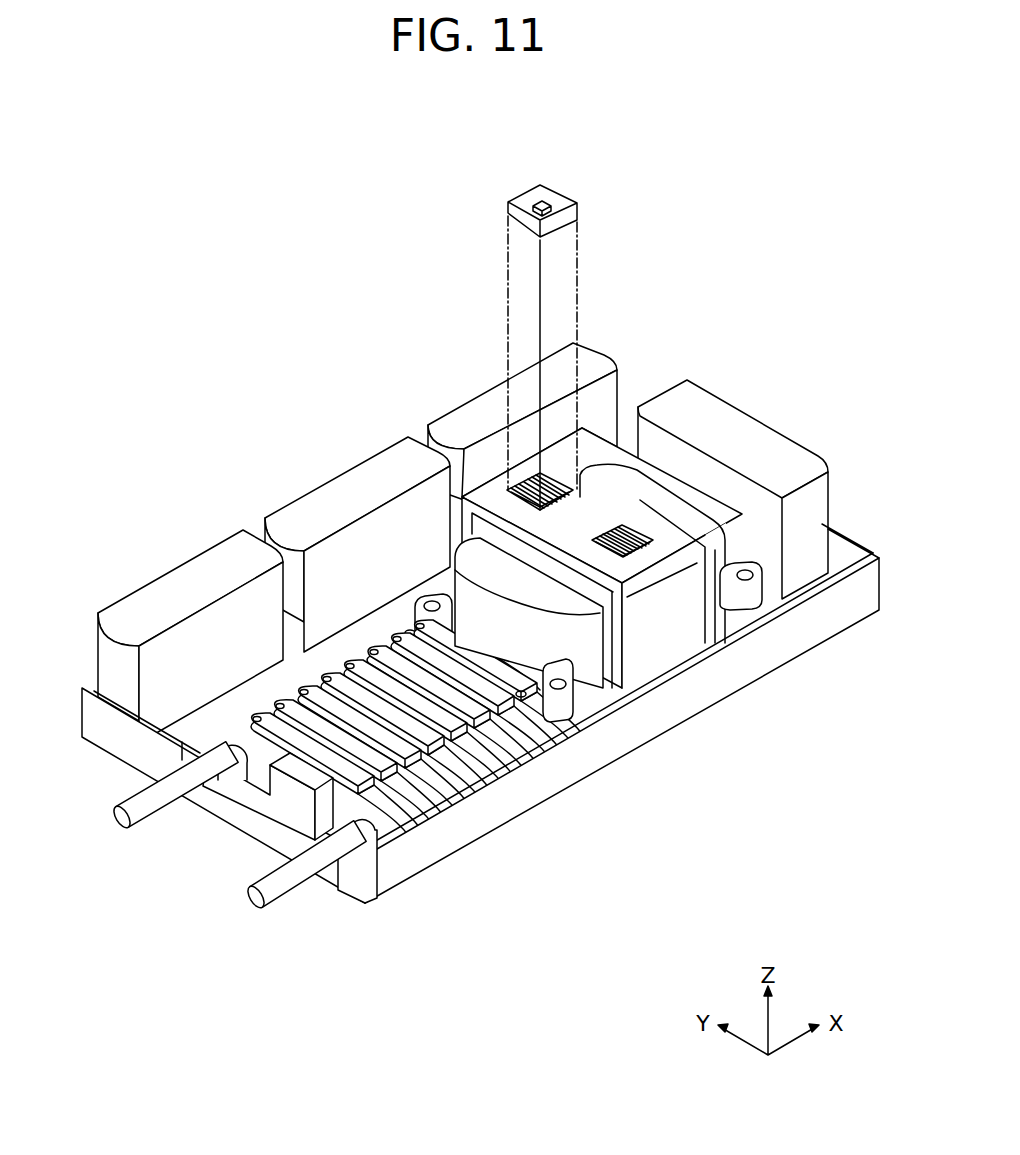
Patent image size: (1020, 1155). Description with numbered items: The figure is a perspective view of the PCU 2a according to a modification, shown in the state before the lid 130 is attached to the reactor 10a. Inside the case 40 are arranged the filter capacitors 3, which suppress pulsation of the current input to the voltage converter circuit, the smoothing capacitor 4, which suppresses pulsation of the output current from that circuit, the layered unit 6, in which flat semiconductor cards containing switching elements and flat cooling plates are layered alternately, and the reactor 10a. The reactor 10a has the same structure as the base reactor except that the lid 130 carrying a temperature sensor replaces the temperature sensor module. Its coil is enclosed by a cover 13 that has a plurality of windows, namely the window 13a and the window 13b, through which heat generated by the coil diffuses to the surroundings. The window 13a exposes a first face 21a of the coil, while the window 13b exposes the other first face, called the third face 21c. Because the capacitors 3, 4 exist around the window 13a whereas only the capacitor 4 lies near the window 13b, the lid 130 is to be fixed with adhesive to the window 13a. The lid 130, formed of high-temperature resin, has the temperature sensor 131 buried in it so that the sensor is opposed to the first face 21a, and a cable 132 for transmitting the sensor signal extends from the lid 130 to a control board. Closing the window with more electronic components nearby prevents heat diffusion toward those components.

The PCU 2a is at (228, 270).
The filter capacitor 3 is at (478, 398).
The smoothing capacitor 4 is at (818, 498).
The layered unit 6 is at (217, 727).
The reactor 10a is at (661, 472).
The cover 13 is at (535, 587).
The window 13a is at (546, 480).
The window 13b is at (624, 528).
The first face 21a is at (533, 478).
The third face 21c is at (700, 635).
The case 40 is at (812, 640).
The lid 130 is at (511, 317).
The temperature sensor 131 is at (540, 188).
The cable 132 is at (600, 175).